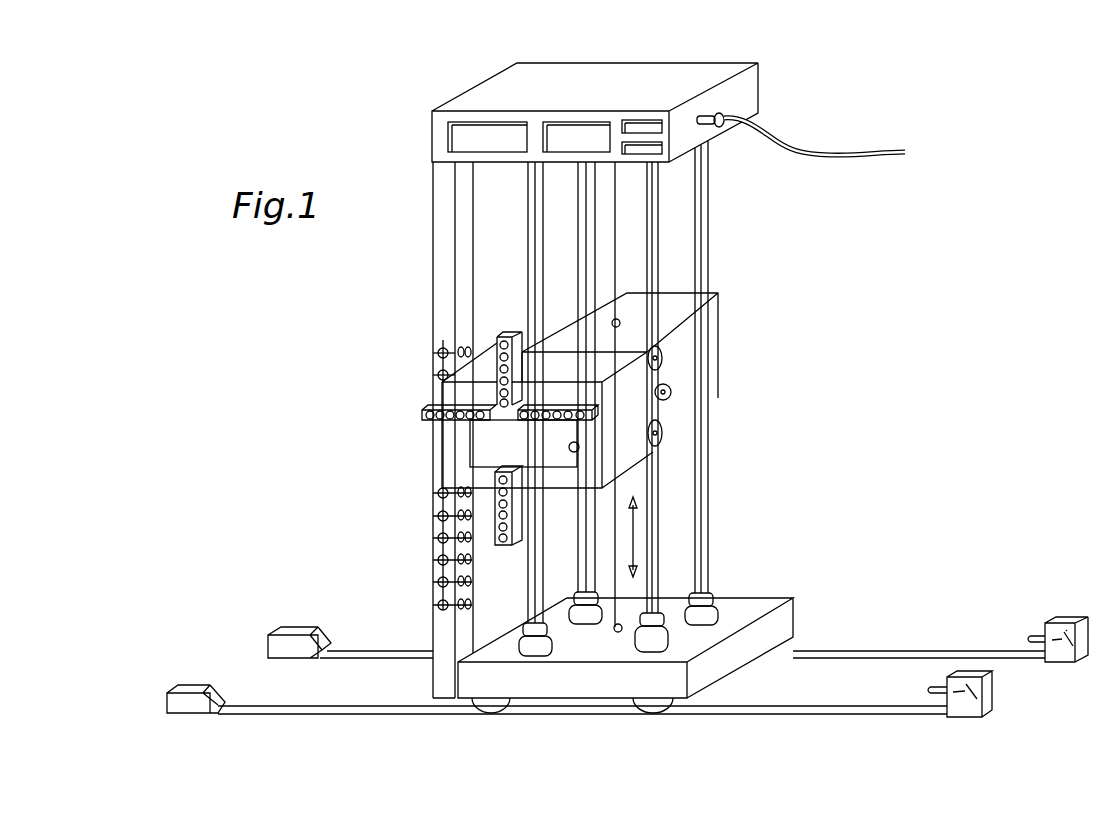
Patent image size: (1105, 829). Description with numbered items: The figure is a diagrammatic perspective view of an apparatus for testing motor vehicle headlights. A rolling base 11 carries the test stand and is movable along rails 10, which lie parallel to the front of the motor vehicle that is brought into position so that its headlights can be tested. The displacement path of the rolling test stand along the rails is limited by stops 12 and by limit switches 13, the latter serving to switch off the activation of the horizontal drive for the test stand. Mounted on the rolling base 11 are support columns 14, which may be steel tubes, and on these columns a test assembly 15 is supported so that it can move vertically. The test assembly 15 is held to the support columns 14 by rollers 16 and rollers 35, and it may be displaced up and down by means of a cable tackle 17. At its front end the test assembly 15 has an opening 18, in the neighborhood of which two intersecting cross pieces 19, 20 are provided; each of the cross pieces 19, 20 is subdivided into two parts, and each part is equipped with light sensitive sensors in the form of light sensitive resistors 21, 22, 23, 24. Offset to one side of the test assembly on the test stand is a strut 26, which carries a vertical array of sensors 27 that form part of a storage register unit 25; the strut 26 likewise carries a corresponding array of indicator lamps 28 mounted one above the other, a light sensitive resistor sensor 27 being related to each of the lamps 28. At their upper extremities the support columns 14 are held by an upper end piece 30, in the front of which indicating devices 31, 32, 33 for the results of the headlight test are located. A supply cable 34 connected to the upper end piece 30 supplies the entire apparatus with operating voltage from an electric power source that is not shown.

The rails 10 is at (363, 655).
The rolling base 11 is at (757, 607).
The stops 12 is at (197, 688).
The limit switches 13 is at (990, 688).
The support columns 14 is at (585, 569).
The test assembly 15 is at (682, 350).
The rollers 16 is at (662, 437).
The cable tackle 17 is at (613, 233).
The opening 18 is at (579, 449).
The cross piece 19 is at (533, 419).
The cross piece 20 is at (513, 337).
The light sensitive resistor 21 is at (493, 364).
The light sensitive resistor 22 is at (506, 524).
The light sensitive resistor 23 is at (470, 419).
The light sensitive resistor 24 is at (570, 419).
The storage register unit 25 is at (402, 533).
The strut 26 is at (443, 298).
The sensors 27 is at (440, 558).
The indicator lamps 28 is at (465, 603).
The upper end piece 30 is at (743, 97).
The indicating device 31 is at (458, 137).
The indicating device 32 is at (570, 137).
The indicating device 33 is at (662, 149).
The supply cable 34 is at (840, 158).
The rollers 35 is at (671, 395).